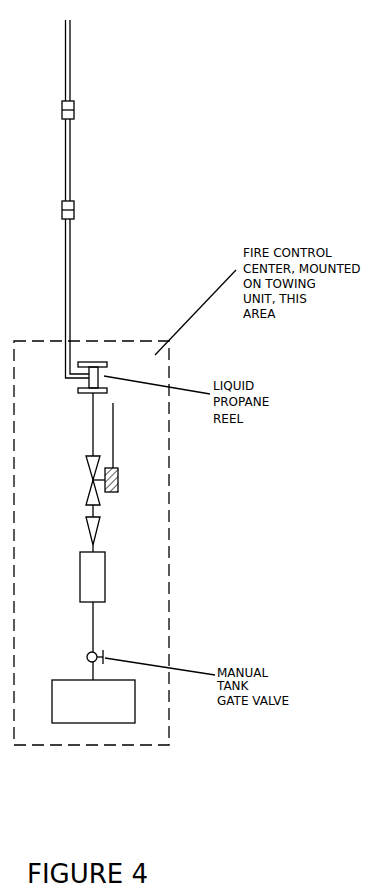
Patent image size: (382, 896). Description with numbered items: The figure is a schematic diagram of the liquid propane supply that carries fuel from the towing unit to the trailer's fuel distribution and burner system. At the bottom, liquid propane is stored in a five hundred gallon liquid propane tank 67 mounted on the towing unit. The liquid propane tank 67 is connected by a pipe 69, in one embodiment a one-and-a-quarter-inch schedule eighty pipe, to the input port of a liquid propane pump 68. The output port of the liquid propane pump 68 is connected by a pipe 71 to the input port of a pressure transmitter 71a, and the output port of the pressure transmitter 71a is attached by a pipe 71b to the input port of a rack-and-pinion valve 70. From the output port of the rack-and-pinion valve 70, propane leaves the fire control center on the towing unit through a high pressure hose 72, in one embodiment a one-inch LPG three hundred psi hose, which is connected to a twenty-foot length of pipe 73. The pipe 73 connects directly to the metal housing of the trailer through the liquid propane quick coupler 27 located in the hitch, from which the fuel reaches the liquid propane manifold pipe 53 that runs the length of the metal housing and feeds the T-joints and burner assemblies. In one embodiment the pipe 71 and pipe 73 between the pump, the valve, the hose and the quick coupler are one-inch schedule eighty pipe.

The liquid propane manifold pipe 53 is at (68, 77).
The liquid propane quick coupler 27 is at (74, 116).
The pipe 73 is at (68, 170).
The high pressure hose 72 is at (66, 305).
The rack-and-pinion valve 70 is at (118, 472).
The pipe 71b is at (93, 510).
The pressure transmitter 71a is at (93, 529).
The pipe 71 is at (105, 552).
The liquid propane pump 68 is at (93, 590).
The pipe 69 is at (93, 623).
The liquid propane tank 67 is at (105, 699).